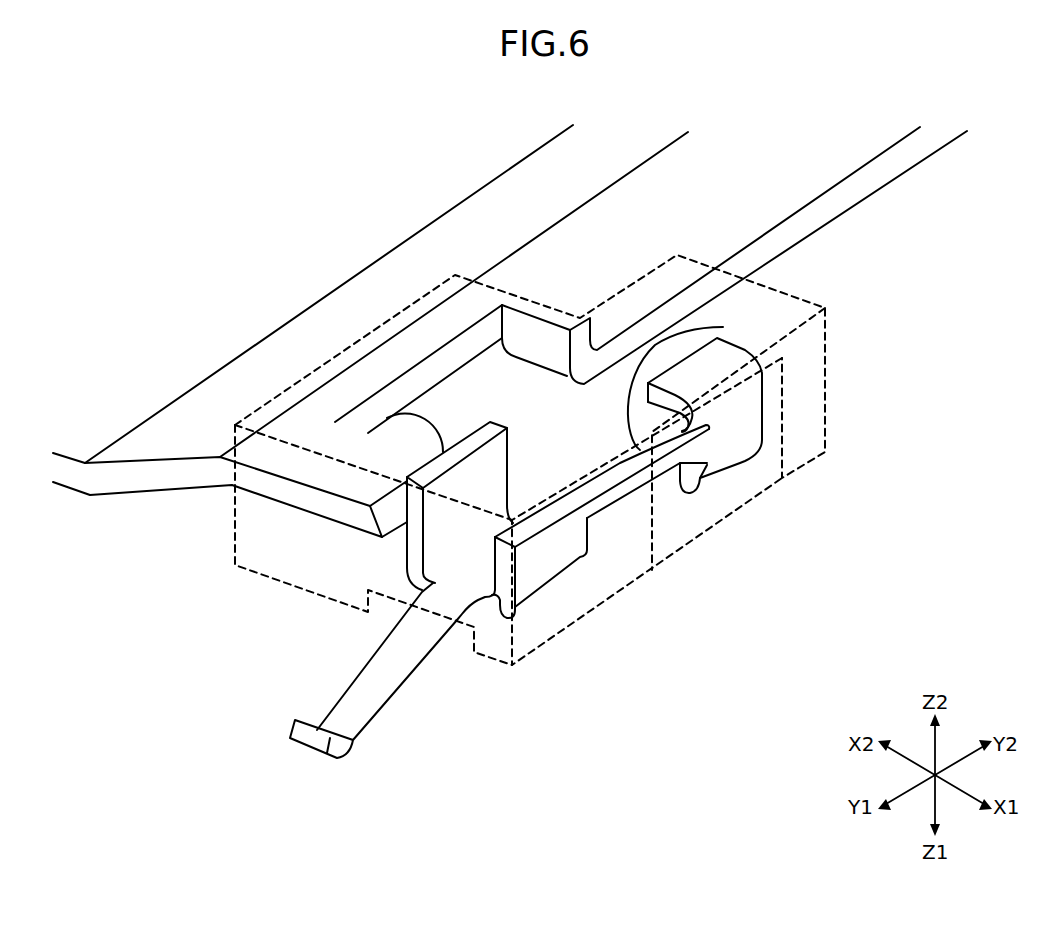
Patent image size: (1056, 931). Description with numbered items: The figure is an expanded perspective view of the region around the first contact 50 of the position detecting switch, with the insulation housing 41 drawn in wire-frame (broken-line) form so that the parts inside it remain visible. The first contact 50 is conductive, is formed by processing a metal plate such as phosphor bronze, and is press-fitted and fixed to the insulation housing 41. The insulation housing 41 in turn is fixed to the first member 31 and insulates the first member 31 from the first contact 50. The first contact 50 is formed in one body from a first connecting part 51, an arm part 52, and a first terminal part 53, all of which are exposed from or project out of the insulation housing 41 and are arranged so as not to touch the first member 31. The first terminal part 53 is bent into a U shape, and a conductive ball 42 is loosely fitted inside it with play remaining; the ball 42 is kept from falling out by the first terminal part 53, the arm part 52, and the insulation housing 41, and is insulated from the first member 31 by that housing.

The first member 31 is at (882, 170).
The insulation housing 41 is at (627, 577).
The conductive ball 42 is at (723, 327).
The first contact 50 is at (682, 493).
The first connecting part 51 is at (398, 693).
The arm part 52 is at (633, 487).
The first terminal part 53 is at (736, 433).